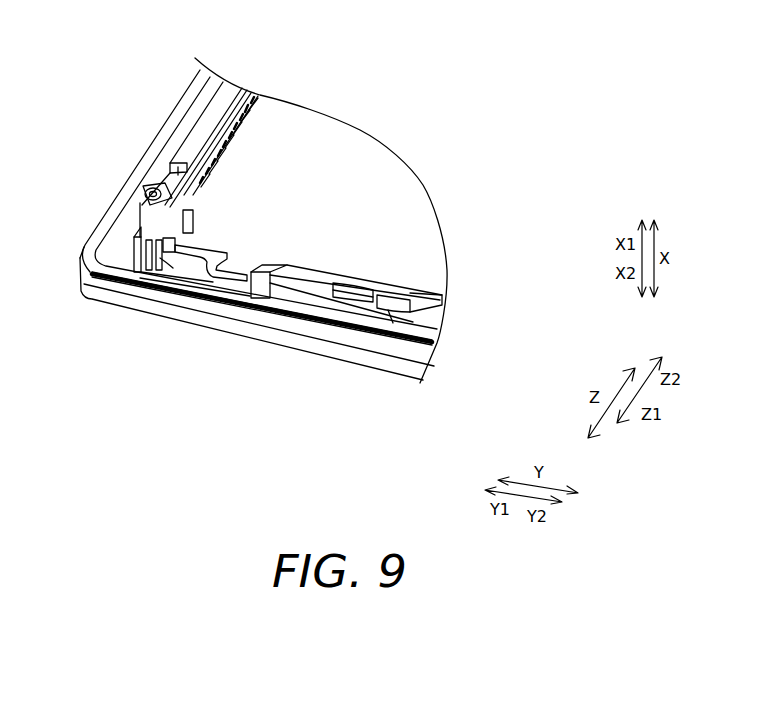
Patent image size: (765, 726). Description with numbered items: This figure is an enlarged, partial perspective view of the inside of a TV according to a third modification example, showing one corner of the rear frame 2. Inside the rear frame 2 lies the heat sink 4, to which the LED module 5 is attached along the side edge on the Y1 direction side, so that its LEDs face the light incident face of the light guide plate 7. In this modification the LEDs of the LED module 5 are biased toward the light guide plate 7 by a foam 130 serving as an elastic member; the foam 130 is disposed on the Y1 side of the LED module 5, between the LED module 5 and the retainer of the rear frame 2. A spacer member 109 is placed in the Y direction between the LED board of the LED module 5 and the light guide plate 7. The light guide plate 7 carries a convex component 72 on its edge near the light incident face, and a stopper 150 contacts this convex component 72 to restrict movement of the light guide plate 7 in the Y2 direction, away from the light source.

The rear frame 2 is at (98, 291).
The heat sink 4 is at (313, 297).
The LED module 5 is at (251, 131).
The light guide plate 7 is at (403, 220).
The convex component 72 is at (245, 268).
The spacer member 109 is at (167, 190).
The foam 130 is at (178, 165).
The stopper 150 is at (236, 272).